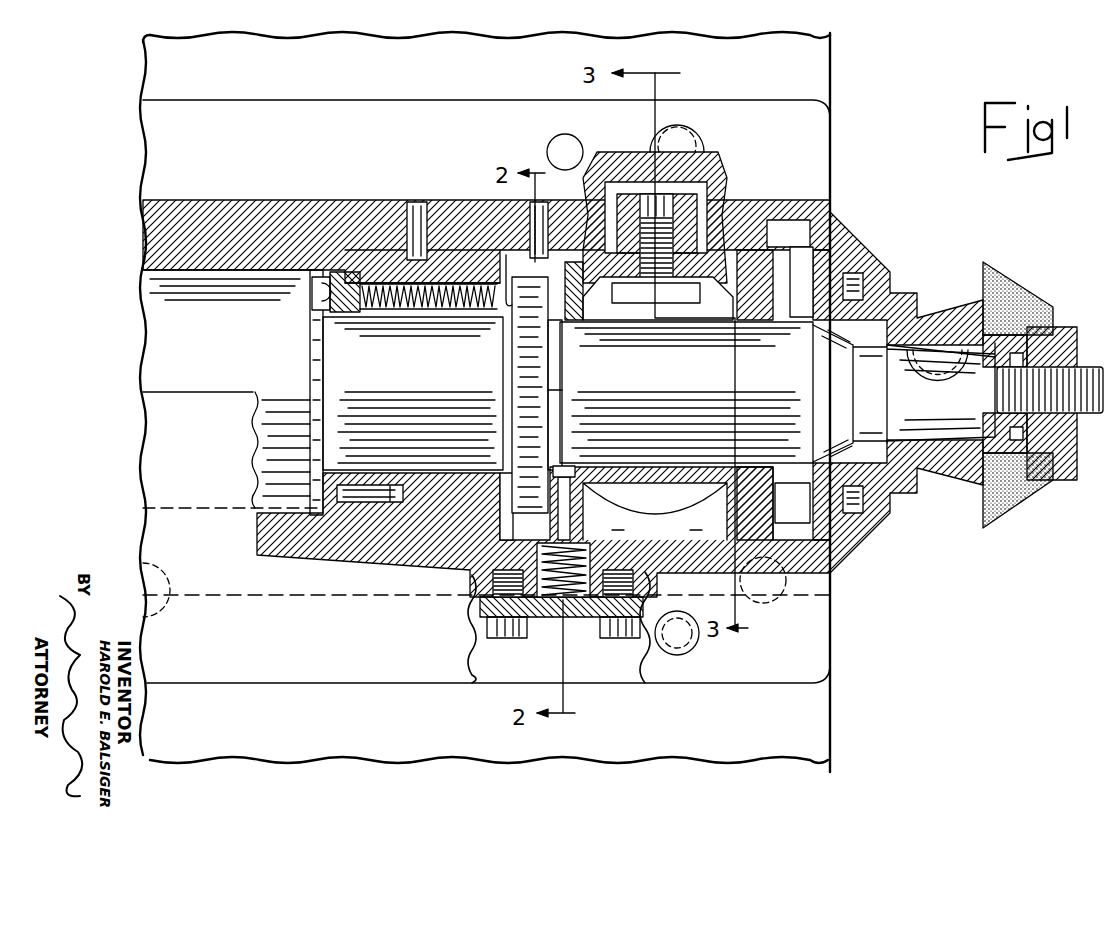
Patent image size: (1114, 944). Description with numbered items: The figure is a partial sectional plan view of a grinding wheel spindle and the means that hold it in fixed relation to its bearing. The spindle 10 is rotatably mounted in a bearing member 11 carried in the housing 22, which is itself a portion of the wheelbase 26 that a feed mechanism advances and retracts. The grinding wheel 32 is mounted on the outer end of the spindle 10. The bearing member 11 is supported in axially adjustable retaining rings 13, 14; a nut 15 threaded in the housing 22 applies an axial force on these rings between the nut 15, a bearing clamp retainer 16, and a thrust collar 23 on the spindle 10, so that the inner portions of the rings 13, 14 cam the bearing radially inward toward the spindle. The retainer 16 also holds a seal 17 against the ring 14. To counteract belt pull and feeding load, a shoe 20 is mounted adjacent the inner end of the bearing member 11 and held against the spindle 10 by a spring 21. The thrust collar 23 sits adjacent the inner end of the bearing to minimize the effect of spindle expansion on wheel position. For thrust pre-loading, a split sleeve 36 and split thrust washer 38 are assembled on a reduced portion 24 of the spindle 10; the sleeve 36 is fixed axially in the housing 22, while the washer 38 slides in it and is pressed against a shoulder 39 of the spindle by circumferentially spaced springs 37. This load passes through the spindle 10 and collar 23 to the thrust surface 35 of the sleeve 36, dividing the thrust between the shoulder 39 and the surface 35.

The spindle 10 is at (150, 330).
The bearing member 11 is at (668, 507).
The retaining ring 13 is at (628, 531).
The retaining ring 14 is at (687, 531).
The nut 15 is at (860, 240).
The bearing clamp retainer 16 is at (747, 262).
The seal 17 is at (777, 250).
The shoe 20 is at (588, 620).
The spring 21 is at (543, 620).
The housing 22 is at (150, 212).
The thrust collar 23 is at (447, 567).
The reduced portion 24 is at (433, 460).
The wheelbase 26 is at (827, 717).
The grinding wheel 32 is at (1020, 280).
The thrust surface 35 is at (503, 262).
The sleeve 36 is at (436, 215).
The springs 37 is at (385, 252).
The thrust washer 38 is at (347, 262).
The shoulder 39 is at (322, 287).